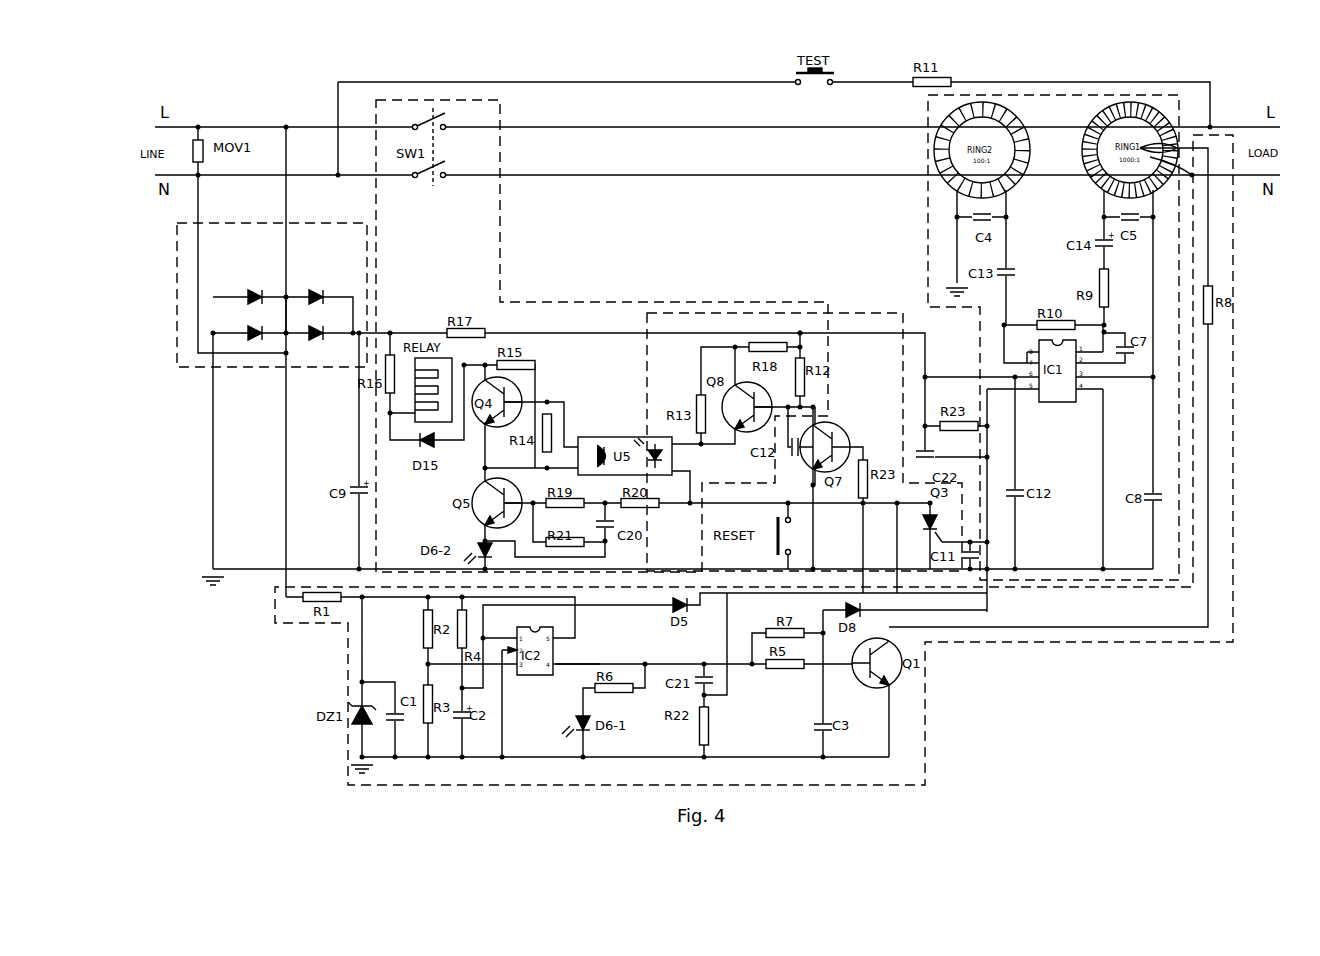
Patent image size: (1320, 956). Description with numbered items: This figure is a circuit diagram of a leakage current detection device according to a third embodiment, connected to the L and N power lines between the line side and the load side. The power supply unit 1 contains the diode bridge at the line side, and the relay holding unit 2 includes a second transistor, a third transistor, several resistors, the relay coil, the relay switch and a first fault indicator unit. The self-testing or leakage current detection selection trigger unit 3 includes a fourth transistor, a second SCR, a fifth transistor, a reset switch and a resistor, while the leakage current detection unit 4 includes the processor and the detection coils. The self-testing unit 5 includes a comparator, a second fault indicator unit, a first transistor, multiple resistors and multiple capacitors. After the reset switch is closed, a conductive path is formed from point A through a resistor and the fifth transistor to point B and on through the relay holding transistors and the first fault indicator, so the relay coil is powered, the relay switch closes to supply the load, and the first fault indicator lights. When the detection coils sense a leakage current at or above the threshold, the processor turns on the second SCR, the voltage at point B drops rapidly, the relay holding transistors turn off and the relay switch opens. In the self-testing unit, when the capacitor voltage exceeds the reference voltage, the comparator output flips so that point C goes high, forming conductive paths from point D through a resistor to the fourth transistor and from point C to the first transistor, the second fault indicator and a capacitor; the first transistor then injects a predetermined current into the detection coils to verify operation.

The power supply unit 1 is at (303, 229).
The relay holding unit 2 is at (500, 208).
The self-testing or leakage current detection selection trigger unit 3 is at (845, 322).
The leakage current detection unit 4 is at (940, 236).
The self-testing unit 5 is at (905, 717).
The point A is at (800, 333).
The point B is at (690, 503).
The point C is at (572, 664).
The point D is at (706, 696).